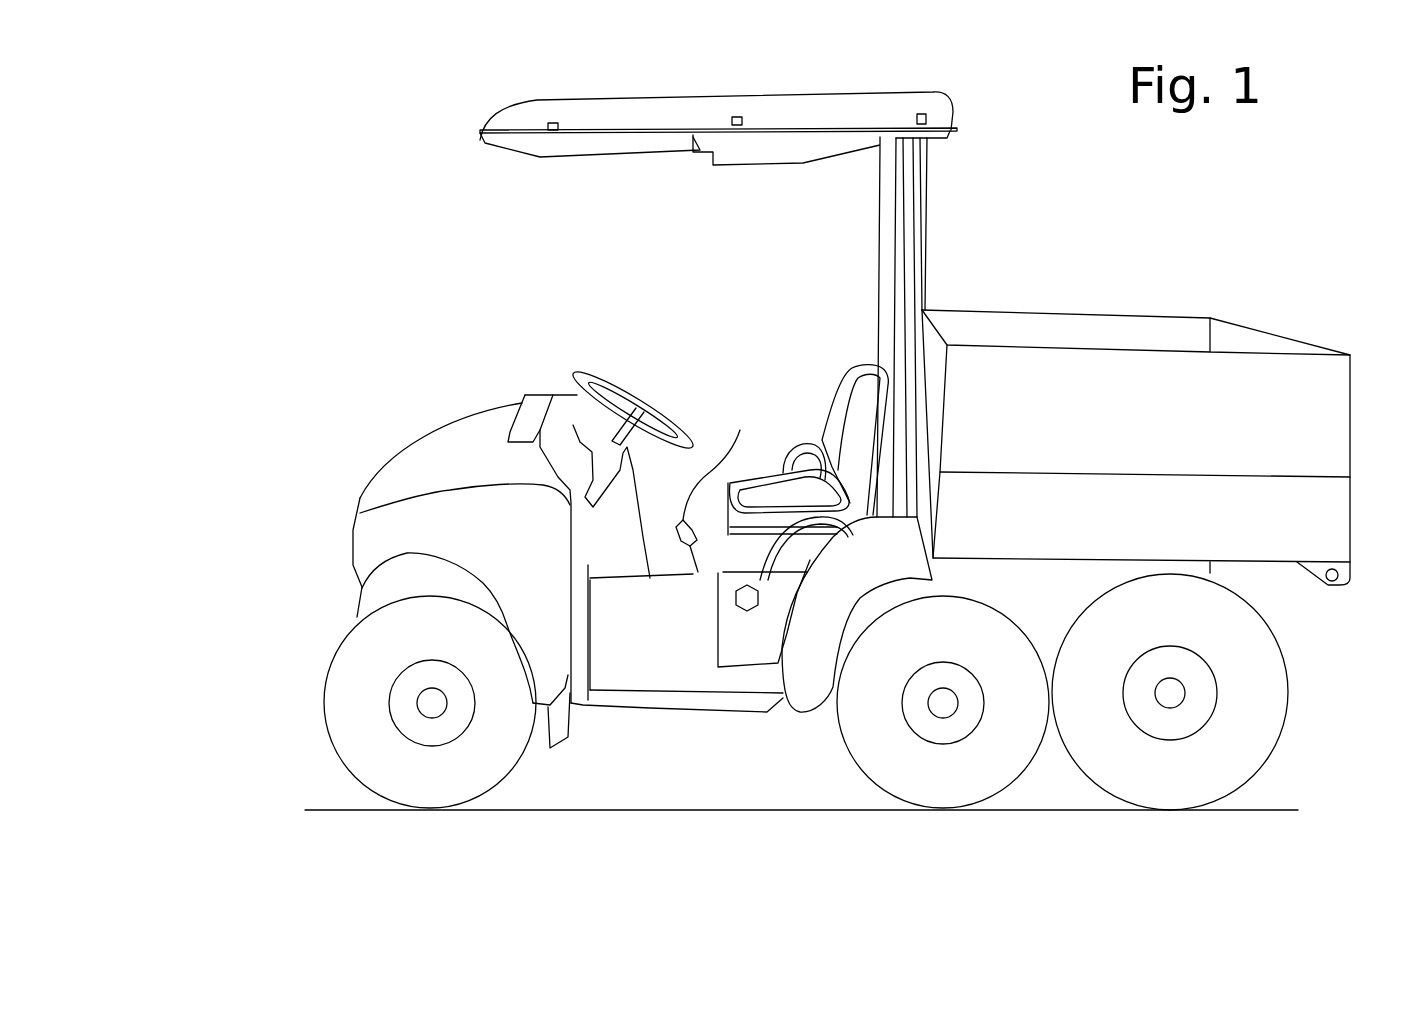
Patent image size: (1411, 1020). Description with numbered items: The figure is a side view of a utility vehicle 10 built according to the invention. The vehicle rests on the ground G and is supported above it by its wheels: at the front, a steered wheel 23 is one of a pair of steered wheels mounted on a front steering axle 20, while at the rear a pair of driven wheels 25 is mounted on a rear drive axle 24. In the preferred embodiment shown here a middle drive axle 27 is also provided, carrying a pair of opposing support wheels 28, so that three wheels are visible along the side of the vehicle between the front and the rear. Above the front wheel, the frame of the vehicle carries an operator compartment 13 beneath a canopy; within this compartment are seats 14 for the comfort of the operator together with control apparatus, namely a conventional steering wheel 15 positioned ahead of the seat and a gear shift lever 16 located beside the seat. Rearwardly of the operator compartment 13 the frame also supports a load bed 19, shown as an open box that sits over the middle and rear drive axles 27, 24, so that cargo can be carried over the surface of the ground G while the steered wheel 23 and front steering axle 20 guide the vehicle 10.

The utility vehicle 10 is at (421, 119).
The operator compartment 13 is at (668, 356).
The seats 14 is at (855, 372).
The steering wheel 15 is at (598, 378).
The gear shift lever 16 is at (721, 482).
The load bed 19 is at (1255, 320).
The front steering axle 20 is at (393, 708).
The steered wheel 23 is at (333, 657).
The rear drive axle 24 is at (1183, 690).
The driven wheels 25 is at (1280, 755).
The middle drive axle 27 is at (968, 725).
The support wheels 28 is at (862, 775).
The ground G is at (1263, 810).